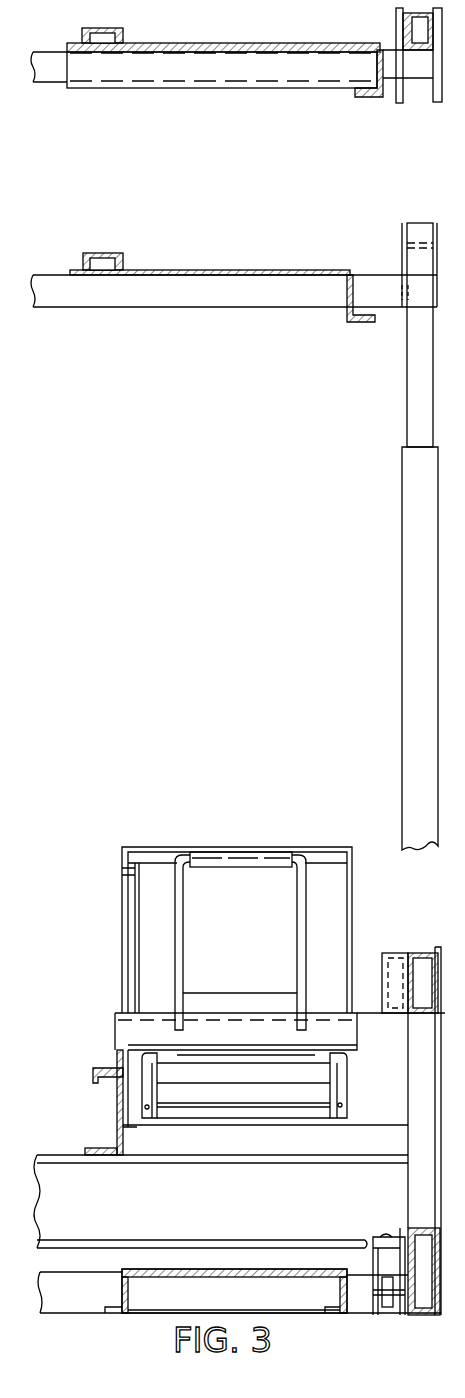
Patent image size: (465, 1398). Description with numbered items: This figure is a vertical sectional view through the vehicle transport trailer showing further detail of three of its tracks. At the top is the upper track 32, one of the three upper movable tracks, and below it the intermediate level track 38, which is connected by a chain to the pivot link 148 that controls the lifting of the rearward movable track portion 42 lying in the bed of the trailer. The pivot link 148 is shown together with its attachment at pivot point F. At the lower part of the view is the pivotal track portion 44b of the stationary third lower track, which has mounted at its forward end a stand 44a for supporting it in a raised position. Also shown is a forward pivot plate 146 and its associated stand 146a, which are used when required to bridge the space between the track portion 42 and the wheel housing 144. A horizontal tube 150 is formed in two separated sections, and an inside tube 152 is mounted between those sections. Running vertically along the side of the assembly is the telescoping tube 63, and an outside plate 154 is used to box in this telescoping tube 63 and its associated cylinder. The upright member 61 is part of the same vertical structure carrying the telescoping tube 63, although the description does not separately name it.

The upper track 32 is at (227, 43).
The intermediate level track 38 is at (213, 270).
The upper post 61 is at (413, 393).
The telescoping tube 63 is at (413, 699).
The stand 44a is at (297, 948).
The pivotal track portion 44b is at (272, 826).
The wheel housing 144 is at (362, 1013).
The forward pivot plate 146 is at (347, 1052).
The stand 146a is at (343, 1093).
The pivot link 148 is at (380, 1228).
The horizontal tube 150 is at (423, 953).
The inside tube 152 is at (390, 953).
The outside plate 154 is at (443, 1129).
The rearward movable track portion 42 is at (177, 1275).
The pivot point F is at (402, 1295).